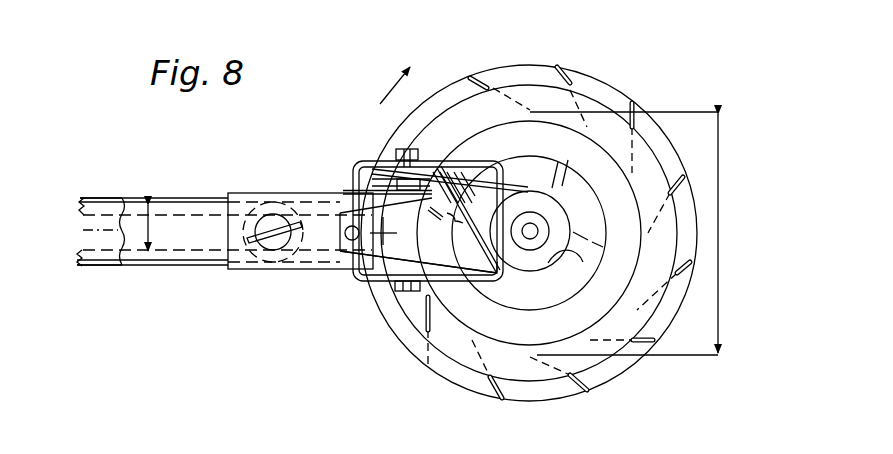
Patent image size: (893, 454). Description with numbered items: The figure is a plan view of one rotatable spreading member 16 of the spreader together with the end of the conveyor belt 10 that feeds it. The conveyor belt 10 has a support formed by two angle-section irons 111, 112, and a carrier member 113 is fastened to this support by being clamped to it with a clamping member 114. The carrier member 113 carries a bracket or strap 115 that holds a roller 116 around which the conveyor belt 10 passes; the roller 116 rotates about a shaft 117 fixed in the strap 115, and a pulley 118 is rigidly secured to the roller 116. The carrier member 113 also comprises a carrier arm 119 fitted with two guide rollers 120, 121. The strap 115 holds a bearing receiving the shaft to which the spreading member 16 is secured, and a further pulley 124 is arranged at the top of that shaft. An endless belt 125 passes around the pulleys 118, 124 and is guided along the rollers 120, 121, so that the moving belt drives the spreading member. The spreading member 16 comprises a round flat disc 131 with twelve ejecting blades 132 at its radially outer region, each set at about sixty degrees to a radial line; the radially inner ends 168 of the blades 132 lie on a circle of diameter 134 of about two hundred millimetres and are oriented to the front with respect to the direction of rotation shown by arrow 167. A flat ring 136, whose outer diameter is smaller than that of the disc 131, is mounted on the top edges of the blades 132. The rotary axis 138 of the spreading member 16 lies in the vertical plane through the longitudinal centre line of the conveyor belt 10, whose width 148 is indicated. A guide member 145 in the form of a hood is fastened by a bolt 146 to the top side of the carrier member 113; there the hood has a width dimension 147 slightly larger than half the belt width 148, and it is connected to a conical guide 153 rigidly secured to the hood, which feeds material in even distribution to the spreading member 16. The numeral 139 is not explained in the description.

The conveyor belt 10 is at (180, 240).
The angle-section iron 111 is at (107, 263).
The angle-section iron 112 is at (123, 177).
The tube end 139 is at (80, 210).
The width of the conveyor belt 148 is at (150, 221).
The carrier member 113 is at (257, 180).
The clamping member 114 is at (280, 210).
The width dimension of the hood 147 is at (310, 240).
The bolt 146 is at (373, 233).
The roller 116 is at (393, 263).
The guide roller 121 is at (486, 270).
The bracket or strap 115 is at (437, 162).
The pulley 118 is at (380, 163).
The carrier arm 119 is at (348, 190).
The shaft 117 is at (410, 148).
The guide member 145 is at (477, 281).
The arrow 167 is at (388, 97).
The spreading member 16 is at (530, 43).
The round flat disc 131 is at (613, 373).
The guide roller 120 is at (462, 152).
The endless belt 125 is at (540, 190).
The rotary axis 138 is at (532, 232).
The pulley 124 is at (600, 300).
The conical guide 153 is at (610, 300).
The flat ring 136 is at (508, 360).
The ejecting blades 132 is at (420, 305).
The radially inner ends of the ejecting blades 168 is at (678, 312).
The diameter 134 is at (745, 215).